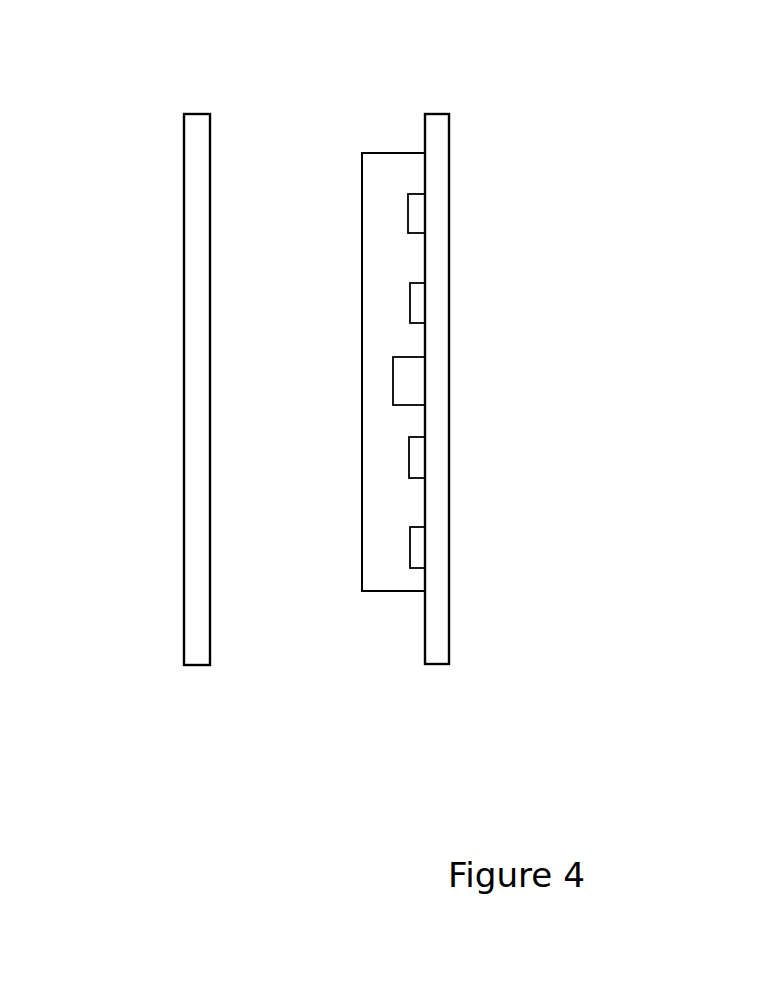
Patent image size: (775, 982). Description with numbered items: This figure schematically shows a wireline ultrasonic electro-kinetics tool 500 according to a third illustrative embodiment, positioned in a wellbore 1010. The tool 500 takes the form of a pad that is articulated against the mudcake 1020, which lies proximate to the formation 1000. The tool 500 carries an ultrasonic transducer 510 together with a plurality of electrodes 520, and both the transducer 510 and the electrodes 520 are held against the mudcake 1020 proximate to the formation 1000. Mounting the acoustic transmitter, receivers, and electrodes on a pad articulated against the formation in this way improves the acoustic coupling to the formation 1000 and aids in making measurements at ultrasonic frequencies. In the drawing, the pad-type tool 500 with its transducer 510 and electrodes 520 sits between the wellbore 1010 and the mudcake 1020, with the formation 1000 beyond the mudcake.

The formation 1000 is at (400, 527).
The mudcake 1020 is at (196, 199).
The wellbore 1010 is at (353, 401).
The tool 500 is at (373, 150).
The ultrasonic transducer 510 is at (410, 381).
The electrodes 520 is at (415, 212).